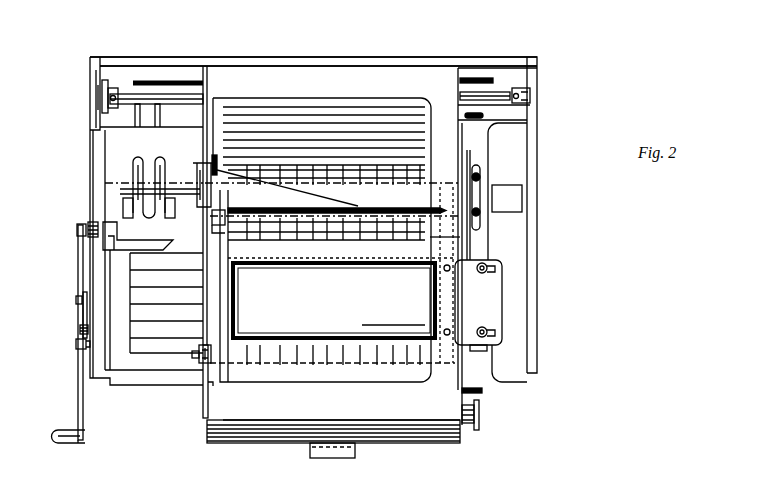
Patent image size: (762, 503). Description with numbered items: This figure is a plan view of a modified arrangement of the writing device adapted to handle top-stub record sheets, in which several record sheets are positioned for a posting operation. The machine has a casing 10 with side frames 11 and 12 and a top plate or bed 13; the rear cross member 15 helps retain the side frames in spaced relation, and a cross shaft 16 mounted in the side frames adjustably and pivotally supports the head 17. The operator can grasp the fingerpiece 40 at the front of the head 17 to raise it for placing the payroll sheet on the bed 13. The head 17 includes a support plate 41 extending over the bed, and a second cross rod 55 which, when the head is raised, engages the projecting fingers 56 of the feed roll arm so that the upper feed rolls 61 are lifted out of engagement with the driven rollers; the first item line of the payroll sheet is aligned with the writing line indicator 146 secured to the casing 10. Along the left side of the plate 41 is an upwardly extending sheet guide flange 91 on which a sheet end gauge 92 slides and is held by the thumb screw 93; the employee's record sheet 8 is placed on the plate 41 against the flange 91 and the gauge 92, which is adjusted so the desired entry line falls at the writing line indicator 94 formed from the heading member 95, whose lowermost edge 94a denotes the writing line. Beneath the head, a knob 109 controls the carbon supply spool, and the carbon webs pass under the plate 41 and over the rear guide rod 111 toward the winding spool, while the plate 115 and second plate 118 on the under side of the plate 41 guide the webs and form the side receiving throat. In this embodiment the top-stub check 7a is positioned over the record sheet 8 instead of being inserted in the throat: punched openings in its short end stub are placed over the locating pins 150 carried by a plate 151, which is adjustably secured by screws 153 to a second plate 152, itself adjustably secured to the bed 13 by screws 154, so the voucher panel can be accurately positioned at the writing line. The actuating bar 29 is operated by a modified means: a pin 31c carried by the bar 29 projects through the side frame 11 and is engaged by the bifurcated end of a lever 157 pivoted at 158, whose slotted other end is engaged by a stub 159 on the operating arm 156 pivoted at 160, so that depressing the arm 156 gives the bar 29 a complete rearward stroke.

The individual earning record 8 is at (326, 98).
The casing 10 is at (90, 180).
The side frame 11 is at (93, 120).
The side frame 12 is at (537, 110).
The top plate or bed 13 is at (522, 362).
The rear cross member 15 is at (137, 57).
The cross shaft 16 is at (498, 92).
The head or sheet holder 17 is at (250, 437).
The actuating bar 29 is at (102, 98).
The pin 31c is at (76, 343).
The fingerpiece 40 is at (342, 458).
The support plate 41 is at (345, 409).
The second cross rod 55 is at (183, 79).
The projecting fingers 56 is at (140, 79).
The upper feed rolls 61 is at (146, 216).
The top-stub payroll check 7a is at (363, 338).
The sheet guide flange 91 is at (205, 113).
The sheet end gauge 92 is at (224, 386).
The thumb screw 93 is at (197, 353).
The writing line indicator 94 is at (216, 212).
The lowermost edge of indicator 94a is at (222, 228).
The heading member 95 is at (337, 200).
The knob 109 is at (479, 425).
The rear guide rod 111 is at (485, 115).
The throat plate 115 is at (467, 150).
The second plate 118 is at (482, 390).
The writing line indicator 146 is at (103, 250).
The locating pins 150 is at (450, 332).
The plate 151 is at (496, 333).
The second plate 152 is at (482, 243).
The screws 153 is at (488, 266).
The screws 154 is at (480, 212).
The operating arm 156 is at (78, 408).
The lever 157 is at (83, 315).
The pivot 158 is at (80, 331).
The stub 159 is at (76, 300).
The pivot 160 is at (77, 229).